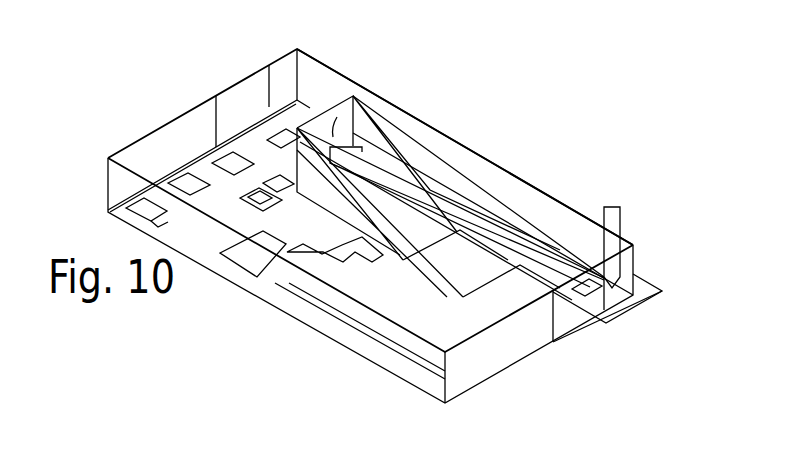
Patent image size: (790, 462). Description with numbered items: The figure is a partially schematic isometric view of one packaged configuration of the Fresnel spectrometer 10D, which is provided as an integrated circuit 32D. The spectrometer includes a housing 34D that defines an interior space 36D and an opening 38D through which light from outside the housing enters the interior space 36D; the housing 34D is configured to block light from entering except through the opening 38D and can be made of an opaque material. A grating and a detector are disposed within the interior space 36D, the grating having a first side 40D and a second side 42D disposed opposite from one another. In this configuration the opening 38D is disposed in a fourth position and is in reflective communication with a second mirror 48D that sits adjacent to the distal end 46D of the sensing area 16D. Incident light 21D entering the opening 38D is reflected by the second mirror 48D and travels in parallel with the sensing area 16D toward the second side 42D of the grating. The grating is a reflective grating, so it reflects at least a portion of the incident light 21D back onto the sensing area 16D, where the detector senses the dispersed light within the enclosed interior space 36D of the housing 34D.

The Fresnel spectrometer 10D is at (188, 86).
The sensing area 16D is at (482, 255).
The incident light 21D is at (617, 205).
The integrated circuit 32D is at (333, 336).
The housing 34D is at (508, 166).
The interior space 36D is at (212, 182).
The opening 38D is at (645, 293).
The first side 40D is at (330, 106).
The second side 42D is at (337, 125).
The distal end 46D is at (583, 333).
The second mirror 48D is at (595, 330).